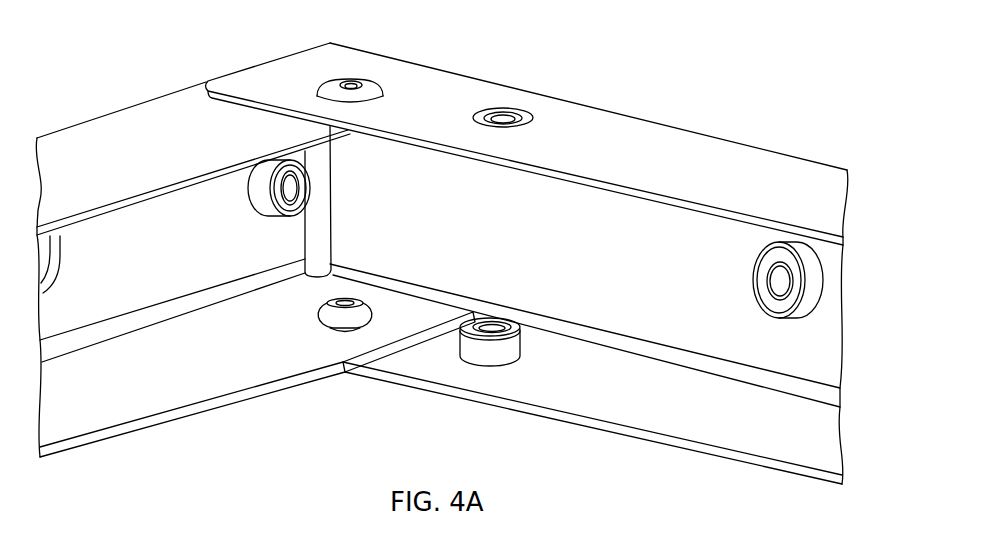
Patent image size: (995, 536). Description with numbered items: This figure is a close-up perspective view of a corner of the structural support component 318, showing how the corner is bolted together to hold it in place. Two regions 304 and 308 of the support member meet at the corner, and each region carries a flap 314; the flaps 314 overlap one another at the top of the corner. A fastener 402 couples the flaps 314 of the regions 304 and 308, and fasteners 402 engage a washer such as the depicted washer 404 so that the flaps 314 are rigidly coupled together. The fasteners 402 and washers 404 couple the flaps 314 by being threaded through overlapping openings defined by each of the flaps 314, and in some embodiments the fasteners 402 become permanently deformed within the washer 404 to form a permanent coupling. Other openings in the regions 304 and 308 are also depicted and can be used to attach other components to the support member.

The structural support component 318 is at (105, 83).
The flaps 314 is at (212, 147).
The region 304 is at (173, 250).
The region 308 is at (525, 250).
The fastener 402 is at (384, 93).
The washer 404 is at (318, 315).